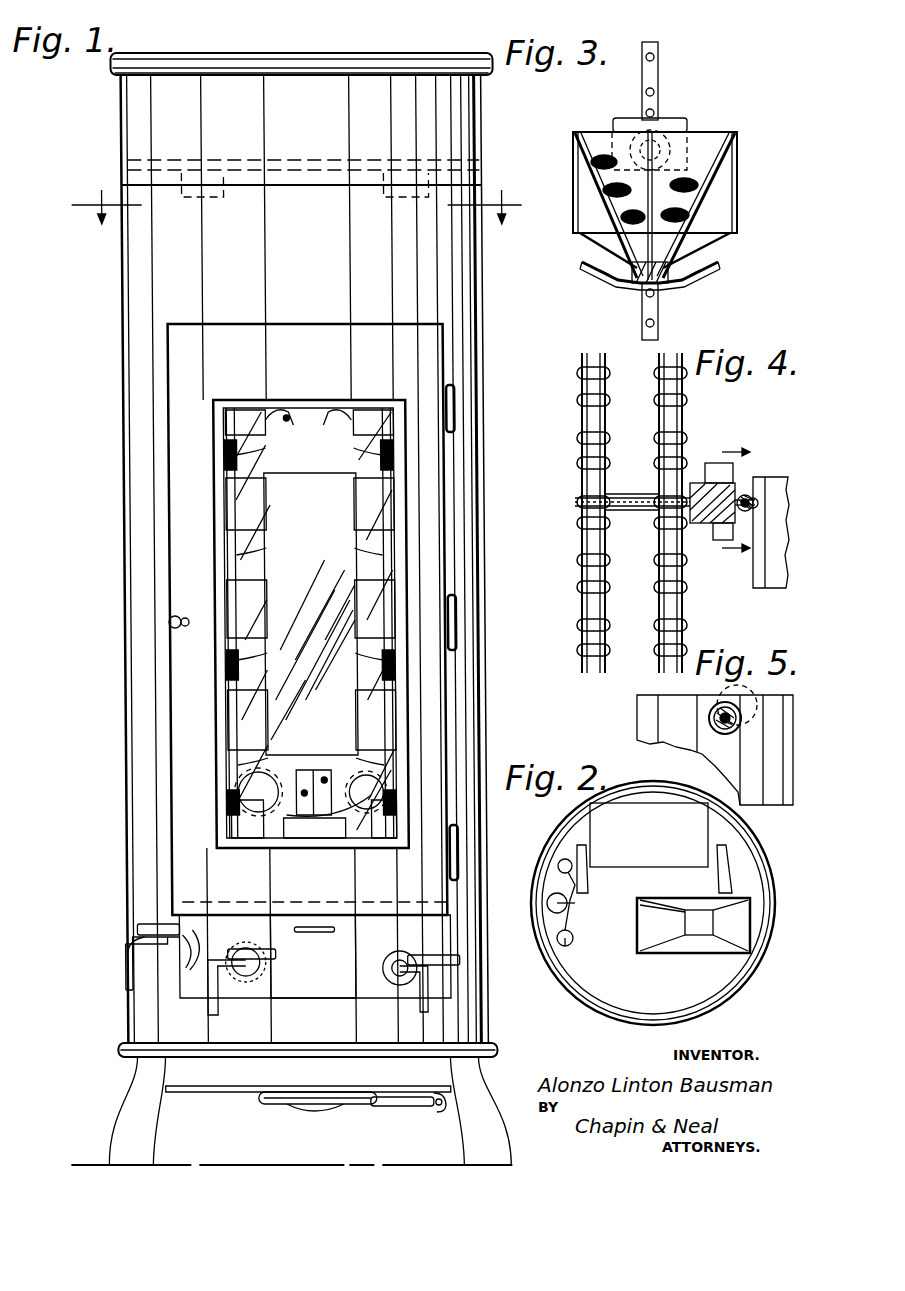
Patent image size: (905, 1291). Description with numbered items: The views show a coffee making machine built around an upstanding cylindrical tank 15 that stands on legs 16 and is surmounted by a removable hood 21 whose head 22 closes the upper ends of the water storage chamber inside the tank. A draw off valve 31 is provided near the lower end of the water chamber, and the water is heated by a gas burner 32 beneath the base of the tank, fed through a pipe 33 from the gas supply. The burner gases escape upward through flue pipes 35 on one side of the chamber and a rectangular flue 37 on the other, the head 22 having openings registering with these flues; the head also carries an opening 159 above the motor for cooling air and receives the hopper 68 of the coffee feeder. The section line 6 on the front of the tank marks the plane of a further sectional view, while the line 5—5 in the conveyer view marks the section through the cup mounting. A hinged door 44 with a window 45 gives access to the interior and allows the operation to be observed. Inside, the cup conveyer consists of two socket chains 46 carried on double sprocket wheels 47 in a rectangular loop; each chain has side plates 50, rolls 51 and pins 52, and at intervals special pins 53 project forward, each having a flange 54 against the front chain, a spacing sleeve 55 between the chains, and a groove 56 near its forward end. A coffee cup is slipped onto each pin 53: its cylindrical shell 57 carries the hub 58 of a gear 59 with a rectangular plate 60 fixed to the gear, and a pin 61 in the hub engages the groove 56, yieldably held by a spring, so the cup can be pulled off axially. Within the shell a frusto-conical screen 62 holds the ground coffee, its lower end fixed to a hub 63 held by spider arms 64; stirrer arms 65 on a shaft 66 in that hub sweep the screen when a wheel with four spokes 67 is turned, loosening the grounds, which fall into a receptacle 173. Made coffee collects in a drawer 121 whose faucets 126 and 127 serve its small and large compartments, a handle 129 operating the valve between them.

In FIG. 4, the section line 5— 5 is at (736, 502).
In FIG. 1, the section line 6— 6 is at (291, 207).
In FIG. 1, the upstanding cylindrical tank 15 is at (130, 572).
In FIG. 1, the legs 16 is at (135, 1118).
In FIG. 1, the removable hood 21 is at (301, 88).
In FIG. 2, the removable hood 21 is at (740, 985).
In FIG. 1, the head 22 is at (236, 167).
In FIG. 2, the head 22 is at (653, 903).
In FIG. 1, the draw off valve 31 is at (116, 958).
In FIG. 1, the gas burner 32 is at (258, 1106).
In FIG. 1, the pipe 33 is at (395, 1108).
In FIG. 2, the flue pipes 35 is at (575, 900).
In FIG. 2, the rectangular flue 37 is at (722, 878).
In FIG. 1, the hinged door 44 is at (440, 673).
In FIG. 1, the window 45 is at (311, 624).
In FIG. 1, the socket chains 46 is at (222, 676).
In FIG. 3, the socket chains 46 is at (655, 70).
In FIG. 4, the socket chains 46 is at (655, 400).
In FIG. 1, the double sprocket wheels 47 is at (272, 842).
In FIG. 4, the side plates 50 is at (605, 605).
In FIG. 4, the rolls 51 is at (580, 603).
In FIG. 4, the pins 52 is at (580, 575).
In FIG. 3, the special pins 53 is at (655, 130).
In FIG. 4, the special pins 53 is at (622, 500).
In FIG. 4, the flange 54 is at (695, 523).
In FIG. 4, the spacing sleeve 55 is at (648, 510).
In FIG. 4, the groove 56 is at (756, 500).
In FIG. 5, the groove 56 is at (710, 722).
In FIG. 1, the cylindrical shell 57 is at (232, 730).
In FIG. 3, the cylindrical shell 57 is at (738, 178).
In FIG. 4, the cylindrical shell 57 is at (758, 588).
In FIG. 5, the cylindrical shell 57 is at (648, 725).
In FIG. 4, the hub 58 is at (750, 496).
In FIG. 5, the hub 58 is at (742, 718).
In FIG. 3, the gear 59 is at (680, 150).
In FIG. 4, the gear 59 is at (718, 462).
In FIG. 3, the rectangular plate 60 is at (630, 118).
In FIG. 4, the rectangular plate 60 is at (718, 466).
In FIG. 4, the pin 61 is at (748, 495).
In FIG. 5, the pin 61 is at (722, 704).
In FIG. 3, the screen 62 is at (700, 205).
In FIG. 3, the hub 63 is at (636, 286).
In FIG. 3, the spider arms 64 is at (590, 240).
In FIG. 3, the stirrer arms 65 is at (592, 132).
In FIG. 3, the shaft 66 is at (690, 284).
In FIG. 3, the spokes 67 is at (590, 270).
In FIG. 2, the hopper 68 is at (690, 948).
In FIG. 1, the drawer 121 is at (335, 956).
In FIG. 1, the draw off faucet 126 is at (203, 1015).
In FIG. 1, the draw off faucet 127 is at (414, 1012).
In FIG. 1, the handle 129 is at (306, 932).
In FIG. 2, the opening 159 is at (649, 835).
In FIG. 1, the receptacle 173 is at (332, 452).